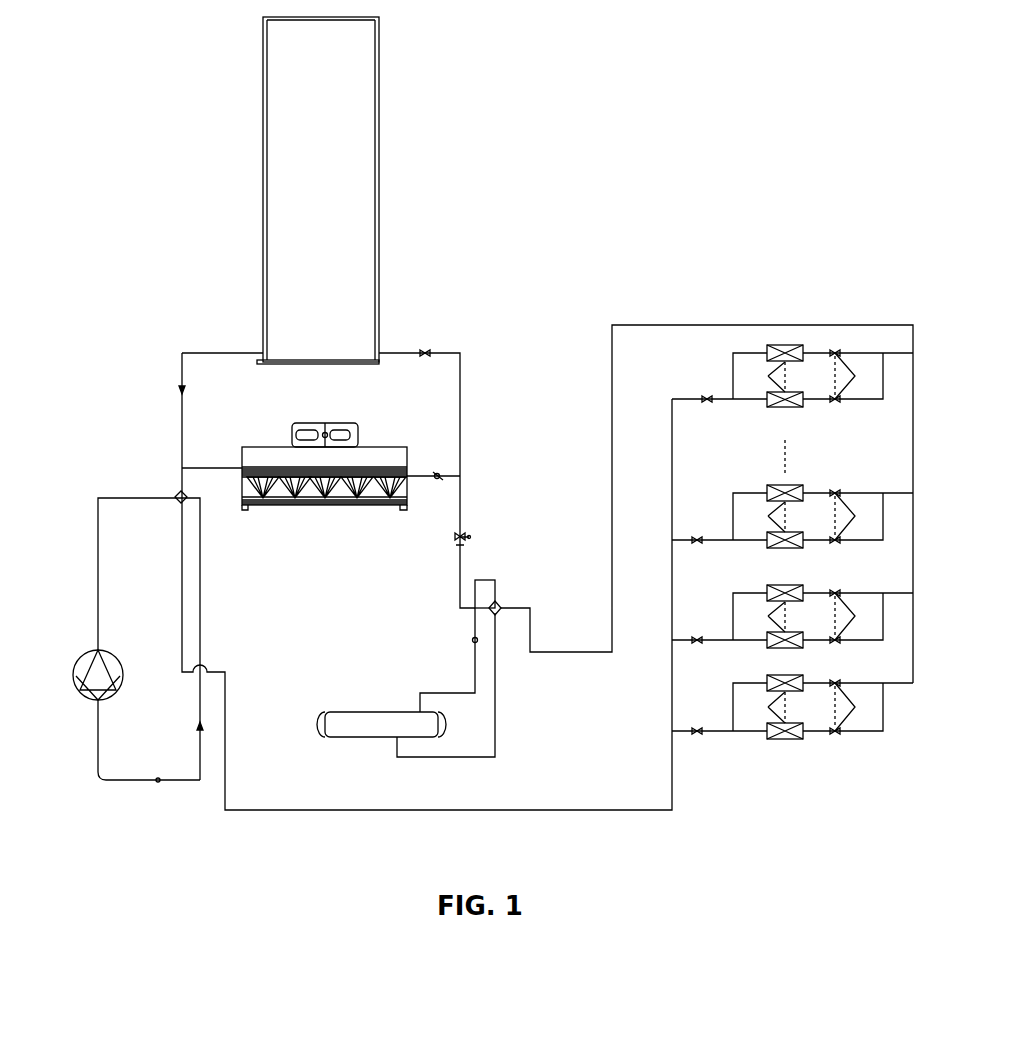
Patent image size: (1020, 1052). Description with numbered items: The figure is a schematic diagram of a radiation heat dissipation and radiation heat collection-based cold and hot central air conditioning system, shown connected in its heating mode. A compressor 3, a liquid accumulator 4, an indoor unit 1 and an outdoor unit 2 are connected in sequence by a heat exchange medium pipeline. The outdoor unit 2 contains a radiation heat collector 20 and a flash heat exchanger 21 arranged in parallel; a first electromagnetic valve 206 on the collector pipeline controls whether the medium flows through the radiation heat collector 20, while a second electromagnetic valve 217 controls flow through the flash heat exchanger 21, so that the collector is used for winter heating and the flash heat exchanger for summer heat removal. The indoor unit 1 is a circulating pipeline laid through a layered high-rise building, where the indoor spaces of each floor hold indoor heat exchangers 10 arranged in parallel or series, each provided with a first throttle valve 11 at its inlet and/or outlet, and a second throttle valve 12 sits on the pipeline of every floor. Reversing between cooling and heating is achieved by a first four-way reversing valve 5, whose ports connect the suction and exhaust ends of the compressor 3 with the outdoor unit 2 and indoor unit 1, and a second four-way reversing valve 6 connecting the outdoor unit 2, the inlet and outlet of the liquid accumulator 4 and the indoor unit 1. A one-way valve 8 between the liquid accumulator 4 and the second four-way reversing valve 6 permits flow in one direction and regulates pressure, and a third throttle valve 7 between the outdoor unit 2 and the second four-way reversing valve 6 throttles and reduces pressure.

The indoor unit 1 is at (792, 592).
The outdoor unit 2 is at (160, 192).
The radiation heat collector 20 is at (275, 253).
The flash heat exchanger 21 is at (305, 460).
The first electromagnetic valve 206 is at (428, 352).
The second electromagnetic valve 217 is at (442, 474).
The compressor 3 is at (73, 672).
The liquid accumulator 4 is at (328, 736).
The first four-way reversing valve 5 is at (176, 494).
The second four-way reversing valve 6 is at (500, 605).
The third throttle valve 7 is at (466, 530).
The one-way valve 8 is at (474, 639).
The indoor heat exchanger 10 is at (773, 542).
The first throttle valve 11 is at (850, 542).
The second throttle valve 12 is at (705, 396).